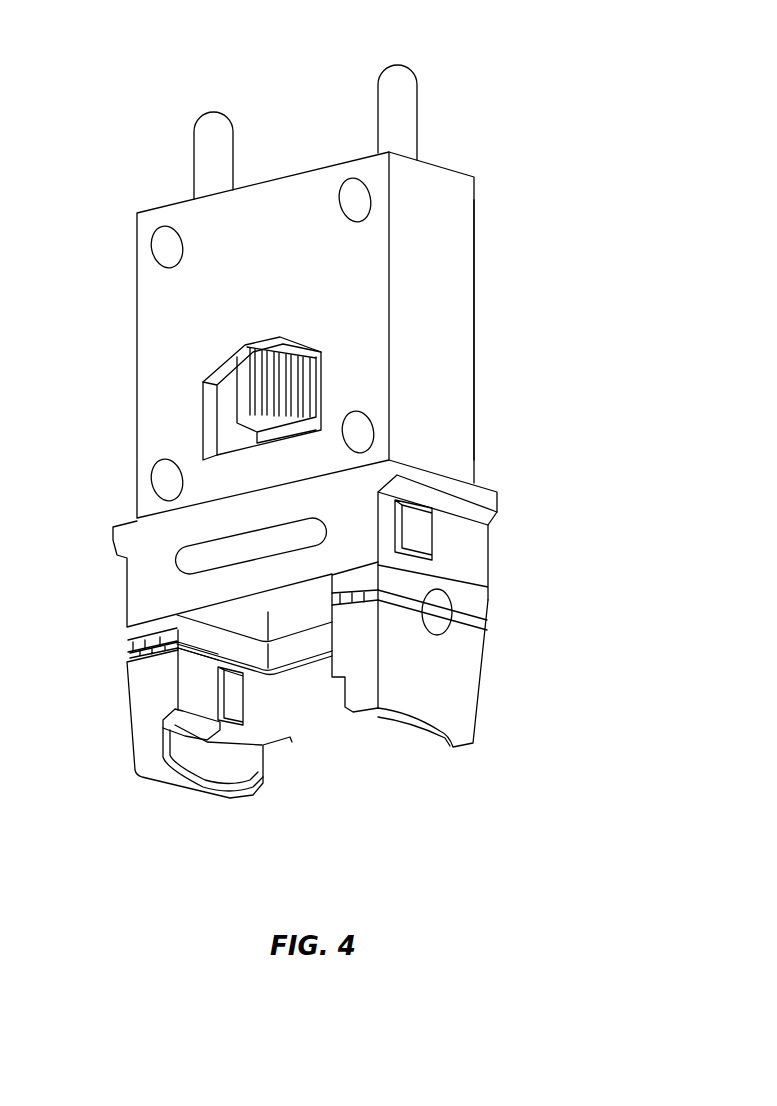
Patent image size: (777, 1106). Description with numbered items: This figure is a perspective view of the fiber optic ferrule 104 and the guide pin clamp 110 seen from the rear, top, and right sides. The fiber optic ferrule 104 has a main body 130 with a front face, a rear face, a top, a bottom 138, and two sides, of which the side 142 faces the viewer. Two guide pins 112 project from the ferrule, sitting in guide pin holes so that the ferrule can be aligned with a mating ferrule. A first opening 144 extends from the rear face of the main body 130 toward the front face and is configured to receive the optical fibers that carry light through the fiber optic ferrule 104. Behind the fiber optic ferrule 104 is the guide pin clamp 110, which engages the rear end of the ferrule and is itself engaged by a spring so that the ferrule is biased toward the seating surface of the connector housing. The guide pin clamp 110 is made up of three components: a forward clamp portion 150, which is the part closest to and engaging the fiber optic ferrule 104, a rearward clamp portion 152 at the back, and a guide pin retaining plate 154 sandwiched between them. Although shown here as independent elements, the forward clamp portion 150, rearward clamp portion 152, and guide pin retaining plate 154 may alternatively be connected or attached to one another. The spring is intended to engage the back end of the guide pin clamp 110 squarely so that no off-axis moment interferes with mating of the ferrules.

The fiber optic ferrule 104 is at (511, 157).
The guide pin clamp 110 is at (505, 600).
The guide pins 112 is at (410, 66).
The main body 130 is at (475, 310).
The bottom 138 is at (302, 276).
The side 142 is at (448, 301).
The first opening 144 is at (300, 622).
The forward clamp portion 150 is at (127, 640).
The rearward clamp portion 152 is at (127, 718).
The guide pin retaining plate 154 is at (482, 628).